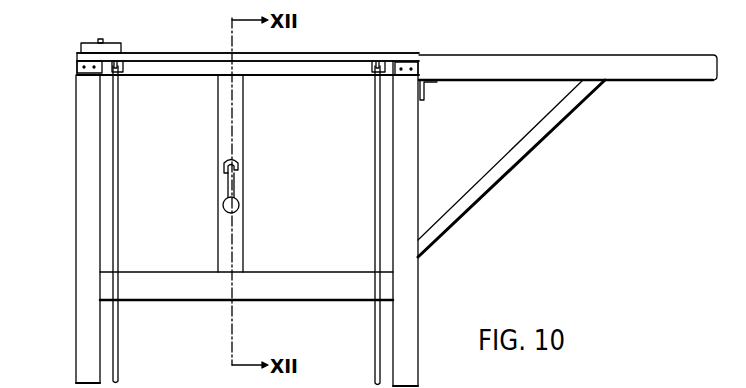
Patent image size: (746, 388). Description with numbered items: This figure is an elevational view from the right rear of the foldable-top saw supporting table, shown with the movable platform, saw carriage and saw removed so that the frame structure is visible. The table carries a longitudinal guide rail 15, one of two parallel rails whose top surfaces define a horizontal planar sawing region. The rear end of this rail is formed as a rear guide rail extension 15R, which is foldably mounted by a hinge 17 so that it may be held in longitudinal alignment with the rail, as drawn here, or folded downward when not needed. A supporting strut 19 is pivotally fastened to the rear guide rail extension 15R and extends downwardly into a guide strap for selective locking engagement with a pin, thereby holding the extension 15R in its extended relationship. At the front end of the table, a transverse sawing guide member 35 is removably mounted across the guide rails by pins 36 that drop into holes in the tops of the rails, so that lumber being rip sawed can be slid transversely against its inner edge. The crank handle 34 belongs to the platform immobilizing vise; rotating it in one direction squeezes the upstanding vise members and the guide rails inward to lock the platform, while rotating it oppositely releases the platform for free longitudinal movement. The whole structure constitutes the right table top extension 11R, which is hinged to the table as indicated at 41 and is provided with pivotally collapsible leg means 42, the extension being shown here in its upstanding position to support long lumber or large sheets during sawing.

The right table top extension 11R is at (406, 46).
The guide rail 15 is at (313, 66).
The rear guide rail extension 15R is at (572, 62).
The hinge 17 is at (426, 90).
The supporting strut 19 is at (533, 145).
The crank handle 34 is at (238, 205).
The transverse sawing guide member 35 is at (140, 36).
The pin 36 is at (97, 40).
The hinge 41 is at (77, 68).
The collapsible leg means 42 is at (118, 213).